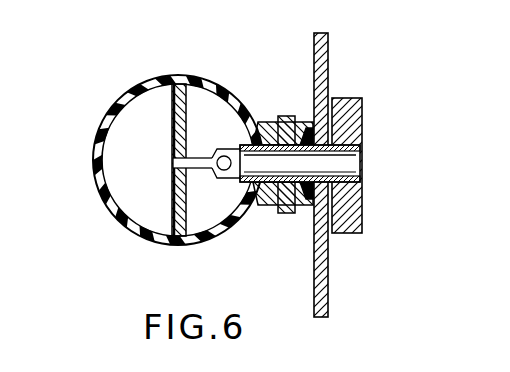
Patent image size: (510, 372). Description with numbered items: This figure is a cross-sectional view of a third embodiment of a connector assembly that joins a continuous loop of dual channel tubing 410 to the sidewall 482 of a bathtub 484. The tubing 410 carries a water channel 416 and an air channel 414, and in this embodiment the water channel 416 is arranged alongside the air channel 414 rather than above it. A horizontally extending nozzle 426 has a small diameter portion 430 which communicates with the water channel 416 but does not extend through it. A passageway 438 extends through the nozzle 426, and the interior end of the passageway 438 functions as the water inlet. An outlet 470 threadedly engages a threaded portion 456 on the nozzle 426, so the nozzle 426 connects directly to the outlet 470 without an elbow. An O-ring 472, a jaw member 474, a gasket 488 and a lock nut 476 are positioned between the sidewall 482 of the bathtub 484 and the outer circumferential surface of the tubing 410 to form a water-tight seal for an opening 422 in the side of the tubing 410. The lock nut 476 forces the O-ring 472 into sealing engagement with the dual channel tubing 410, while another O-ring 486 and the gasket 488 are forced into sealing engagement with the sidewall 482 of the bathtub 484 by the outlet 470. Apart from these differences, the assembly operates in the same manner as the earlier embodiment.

The dual channel tubing 410 is at (95, 180).
The air channel 414 is at (200, 100).
The water channel 416 is at (147, 120).
The opening 422 is at (240, 178).
The nozzle 426 is at (213, 118).
The small diameter portion 430 is at (178, 165).
The passageway 438 is at (360, 163).
The threaded portion 456 is at (352, 195).
The outlet 470 is at (365, 130).
The O-ring 472 is at (255, 140).
The jaw member 474 is at (260, 207).
The lock nut 476 is at (283, 214).
The sidewall 482 is at (330, 52).
The bathtub 484 is at (328, 297).
The O-ring 486 is at (350, 99).
The gasket 488 is at (300, 212).